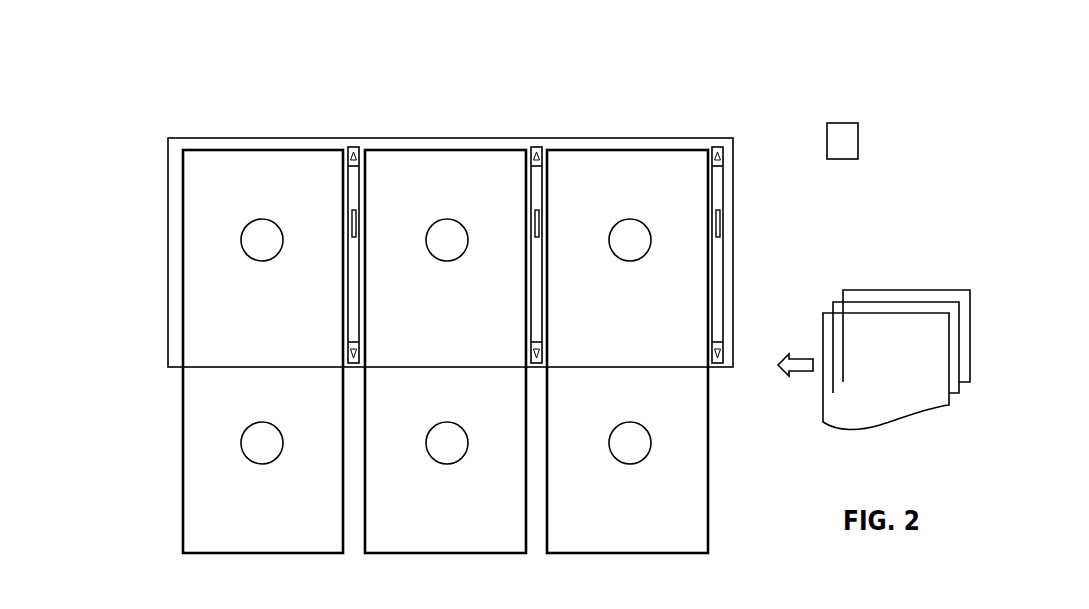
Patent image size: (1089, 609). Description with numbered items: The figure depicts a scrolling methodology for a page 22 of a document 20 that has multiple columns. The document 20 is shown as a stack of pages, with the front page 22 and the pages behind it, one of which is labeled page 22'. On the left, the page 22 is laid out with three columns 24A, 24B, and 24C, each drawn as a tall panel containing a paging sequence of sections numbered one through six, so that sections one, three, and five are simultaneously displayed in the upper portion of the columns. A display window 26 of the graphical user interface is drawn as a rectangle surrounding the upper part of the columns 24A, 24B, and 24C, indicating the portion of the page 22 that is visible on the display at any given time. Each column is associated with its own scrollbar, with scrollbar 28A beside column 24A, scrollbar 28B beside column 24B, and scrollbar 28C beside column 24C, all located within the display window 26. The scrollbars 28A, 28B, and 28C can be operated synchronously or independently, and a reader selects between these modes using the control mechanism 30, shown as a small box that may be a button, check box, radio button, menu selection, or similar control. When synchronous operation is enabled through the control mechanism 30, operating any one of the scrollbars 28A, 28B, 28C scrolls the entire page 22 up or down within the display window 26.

The document 20 is at (920, 302).
The page 22 is at (886, 371).
The page 22' is at (948, 325).
The column 24A is at (264, 134).
The column 24B is at (443, 134).
The column 24C is at (629, 134).
The display window 26 is at (168, 268).
The scrollbar 28A is at (353, 134).
The scrollbar 28B is at (535, 134).
The scrollbar 28C is at (717, 134).
The control mechanism 30 is at (850, 123).